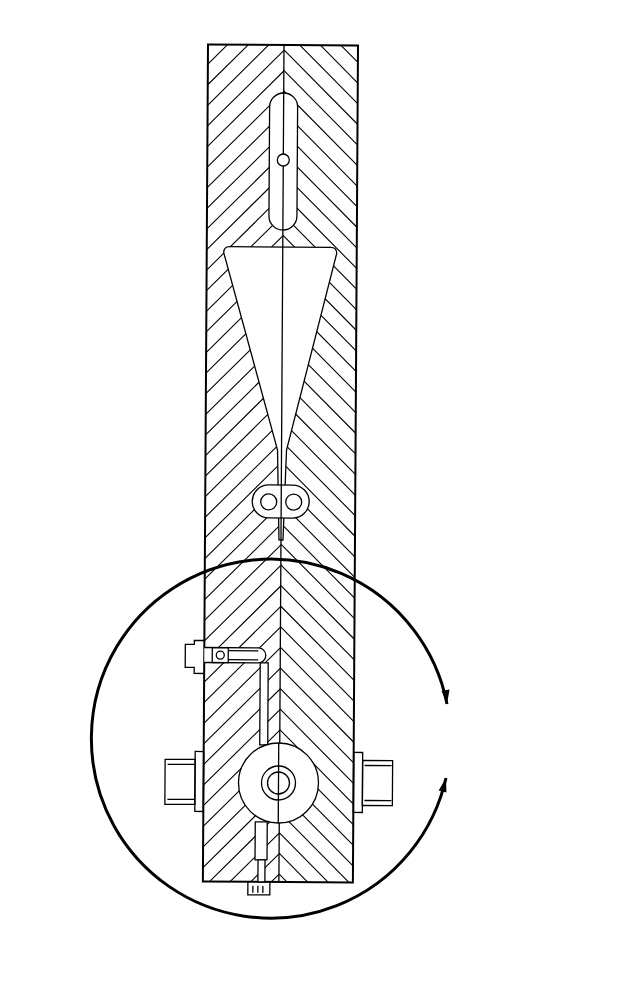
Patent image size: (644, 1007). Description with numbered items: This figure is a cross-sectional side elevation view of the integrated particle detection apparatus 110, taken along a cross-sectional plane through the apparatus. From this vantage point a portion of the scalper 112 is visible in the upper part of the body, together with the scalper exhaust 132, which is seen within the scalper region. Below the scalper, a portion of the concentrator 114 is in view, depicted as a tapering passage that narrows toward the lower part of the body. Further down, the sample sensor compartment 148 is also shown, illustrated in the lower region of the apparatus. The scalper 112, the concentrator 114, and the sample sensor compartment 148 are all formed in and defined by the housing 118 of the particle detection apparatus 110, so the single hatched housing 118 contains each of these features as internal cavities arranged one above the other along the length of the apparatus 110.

The particle detection apparatus 110 is at (443, 140).
The scalper 112 is at (285, 196).
The concentrator 114 is at (292, 373).
The housing 118 is at (303, 613).
The scalper exhaust 132 is at (278, 160).
The sample sensor compartment 148 is at (258, 762).